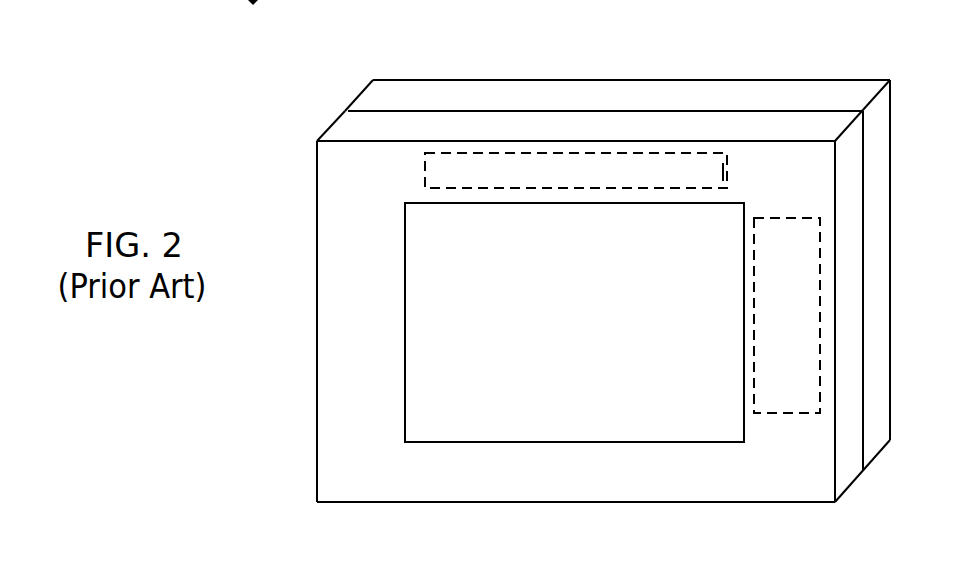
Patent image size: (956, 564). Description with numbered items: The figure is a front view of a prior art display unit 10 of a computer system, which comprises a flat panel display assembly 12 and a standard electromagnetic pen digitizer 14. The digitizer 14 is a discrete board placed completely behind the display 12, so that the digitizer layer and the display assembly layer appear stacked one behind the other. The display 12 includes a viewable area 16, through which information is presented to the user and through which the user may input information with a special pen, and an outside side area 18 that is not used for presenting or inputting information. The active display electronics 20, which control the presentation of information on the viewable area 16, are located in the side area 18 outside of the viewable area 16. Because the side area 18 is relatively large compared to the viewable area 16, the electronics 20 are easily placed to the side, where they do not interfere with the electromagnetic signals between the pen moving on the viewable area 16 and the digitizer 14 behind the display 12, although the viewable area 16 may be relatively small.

The display unit 10 is at (505, 254).
The flat panel display assembly 12 is at (350, 124).
The electromagnetic pen digitizer 14 is at (478, 95).
The viewable area 16 is at (620, 427).
The side area 18 is at (350, 190).
The active display electronics 20 is at (716, 172).